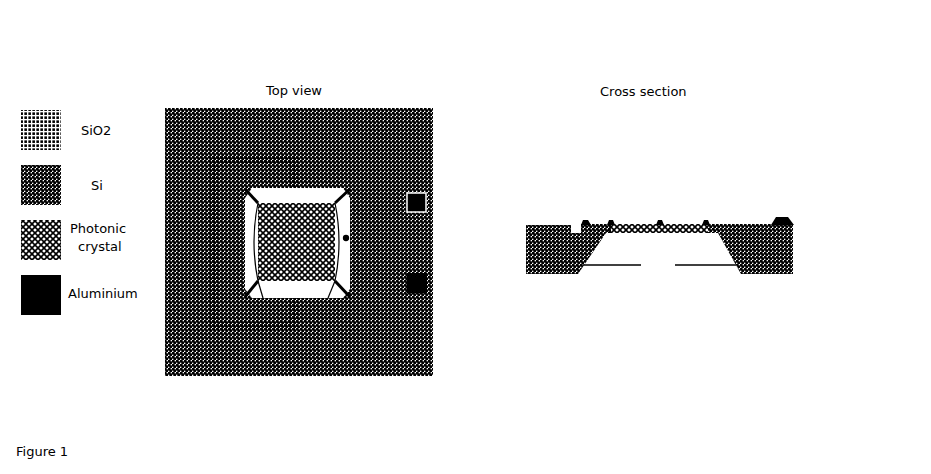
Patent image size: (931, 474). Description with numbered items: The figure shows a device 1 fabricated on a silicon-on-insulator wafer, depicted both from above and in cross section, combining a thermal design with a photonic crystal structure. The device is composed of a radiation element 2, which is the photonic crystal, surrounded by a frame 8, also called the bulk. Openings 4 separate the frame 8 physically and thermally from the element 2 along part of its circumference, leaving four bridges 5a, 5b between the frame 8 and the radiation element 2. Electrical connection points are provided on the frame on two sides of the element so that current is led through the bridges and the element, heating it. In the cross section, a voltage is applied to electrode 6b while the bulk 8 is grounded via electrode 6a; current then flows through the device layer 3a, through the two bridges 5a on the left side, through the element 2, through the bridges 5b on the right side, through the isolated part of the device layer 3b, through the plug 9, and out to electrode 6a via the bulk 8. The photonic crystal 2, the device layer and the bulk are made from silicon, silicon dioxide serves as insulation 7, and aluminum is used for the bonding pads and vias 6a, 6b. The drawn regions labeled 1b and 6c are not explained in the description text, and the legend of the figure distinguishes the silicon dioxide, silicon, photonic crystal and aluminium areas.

The device 1 is at (155, 100).
The inner silicon region 1b is at (233, 152).
The radiation element 2 is at (292, 197).
The device layer 3a is at (254, 182).
The isolated part of the device layer 3b is at (259, 150).
The openings 4 is at (339, 230).
The bridges on the left side 5a is at (320, 280).
The bridges on the right side 5b is at (255, 280).
The electrode 6a is at (420, 203).
The electrode 6b is at (420, 286).
The aluminium contact 6c is at (773, 209).
The insulation 7 is at (522, 228).
The frame 8 is at (659, 266).
The plug 9 is at (208, 280).